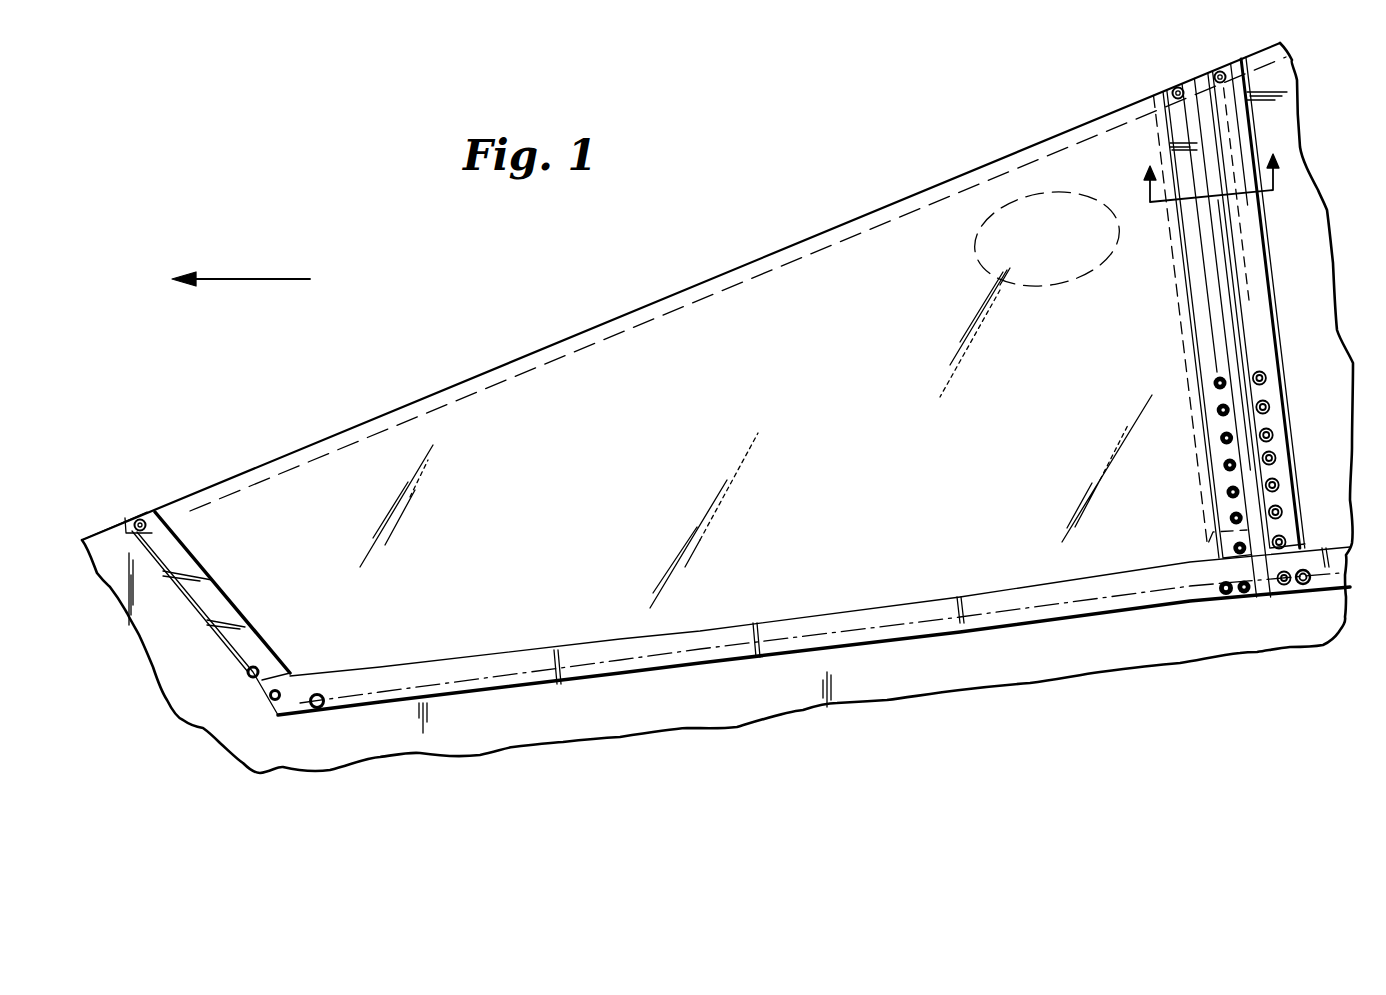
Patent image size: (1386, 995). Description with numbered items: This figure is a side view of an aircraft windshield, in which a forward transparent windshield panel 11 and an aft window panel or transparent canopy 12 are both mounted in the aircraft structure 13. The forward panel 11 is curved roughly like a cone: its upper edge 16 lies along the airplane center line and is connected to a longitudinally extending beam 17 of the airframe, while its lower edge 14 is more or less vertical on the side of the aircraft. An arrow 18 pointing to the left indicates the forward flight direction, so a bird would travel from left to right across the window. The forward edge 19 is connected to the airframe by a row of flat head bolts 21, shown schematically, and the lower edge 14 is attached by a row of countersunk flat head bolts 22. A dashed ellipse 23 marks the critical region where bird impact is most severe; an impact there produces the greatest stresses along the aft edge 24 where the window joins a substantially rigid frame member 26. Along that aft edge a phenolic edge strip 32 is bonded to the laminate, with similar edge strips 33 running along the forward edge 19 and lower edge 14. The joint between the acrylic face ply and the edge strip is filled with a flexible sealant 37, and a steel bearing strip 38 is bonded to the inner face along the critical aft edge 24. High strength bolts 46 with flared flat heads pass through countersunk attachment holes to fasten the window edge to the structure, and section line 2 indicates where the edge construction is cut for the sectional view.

The section line 2- 2 is at (1206, 168).
The forward transparent windshield panel 11 is at (618, 366).
The aft window panel 12 is at (1325, 268).
The aircraft structure 13 is at (1000, 678).
The lower edge 14 is at (717, 663).
The upper edge 16 is at (755, 238).
The longitudinally extending beam 17 is at (468, 402).
The arrow 18 is at (276, 281).
The forward edge 19 is at (220, 647).
The flat head bolts 21 is at (259, 668).
The countersunk flat head bolts 22 is at (318, 709).
The dashed ellipse 23 is at (985, 238).
The aft edge 24 is at (1232, 350).
The rigid frame member 26 is at (1250, 437).
The edge strip 32 is at (1195, 313).
The edge strips 33 is at (213, 600).
The sealant 37 is at (1185, 277).
The steel bearing strip 38 is at (1190, 344).
The high strength bolt 46 is at (1225, 492).